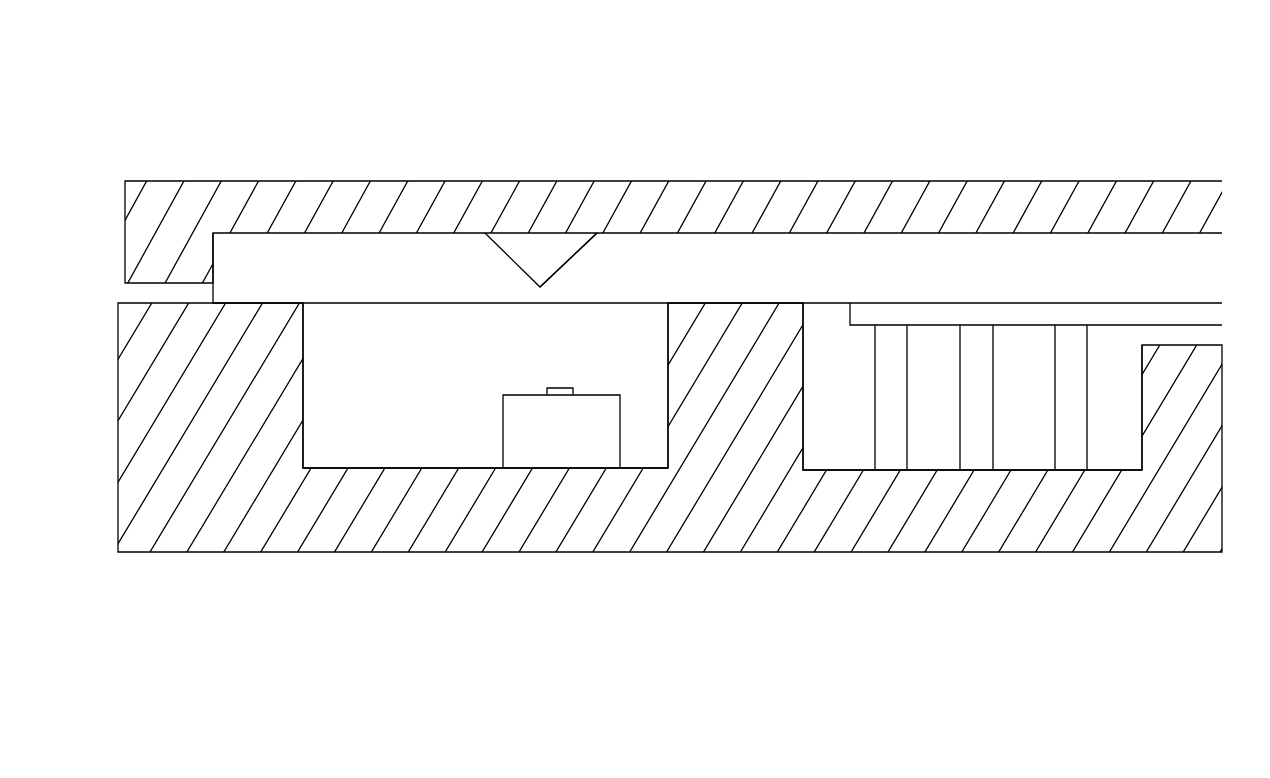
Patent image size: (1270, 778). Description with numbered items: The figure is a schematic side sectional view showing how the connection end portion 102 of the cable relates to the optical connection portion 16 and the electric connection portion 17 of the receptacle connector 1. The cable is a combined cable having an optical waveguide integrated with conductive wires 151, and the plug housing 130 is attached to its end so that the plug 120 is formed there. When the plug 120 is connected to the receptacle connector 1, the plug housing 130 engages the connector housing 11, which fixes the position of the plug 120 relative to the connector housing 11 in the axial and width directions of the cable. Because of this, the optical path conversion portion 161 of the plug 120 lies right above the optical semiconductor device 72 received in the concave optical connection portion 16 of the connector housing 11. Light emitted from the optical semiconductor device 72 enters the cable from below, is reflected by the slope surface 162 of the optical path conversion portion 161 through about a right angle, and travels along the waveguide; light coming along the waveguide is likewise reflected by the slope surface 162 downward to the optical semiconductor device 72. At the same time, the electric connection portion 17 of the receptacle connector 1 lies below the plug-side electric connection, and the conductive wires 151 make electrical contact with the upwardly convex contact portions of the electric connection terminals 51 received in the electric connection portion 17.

The receptacle connector 1 is at (607, 595).
The connector housing 11 is at (258, 552).
The optical connection portion 16 is at (373, 460).
The electric connection portion 17 is at (843, 459).
The electric connection terminals 51 is at (1087, 455).
The optical semiconductor device 72 is at (503, 428).
The connection end portion 102 is at (802, 257).
The plug 120 is at (1040, 84).
The plug housing 130 is at (238, 181).
The conductive wires 151 is at (1035, 313).
The optical path conversion portion 161 is at (535, 253).
The slope surface 162 is at (562, 263).